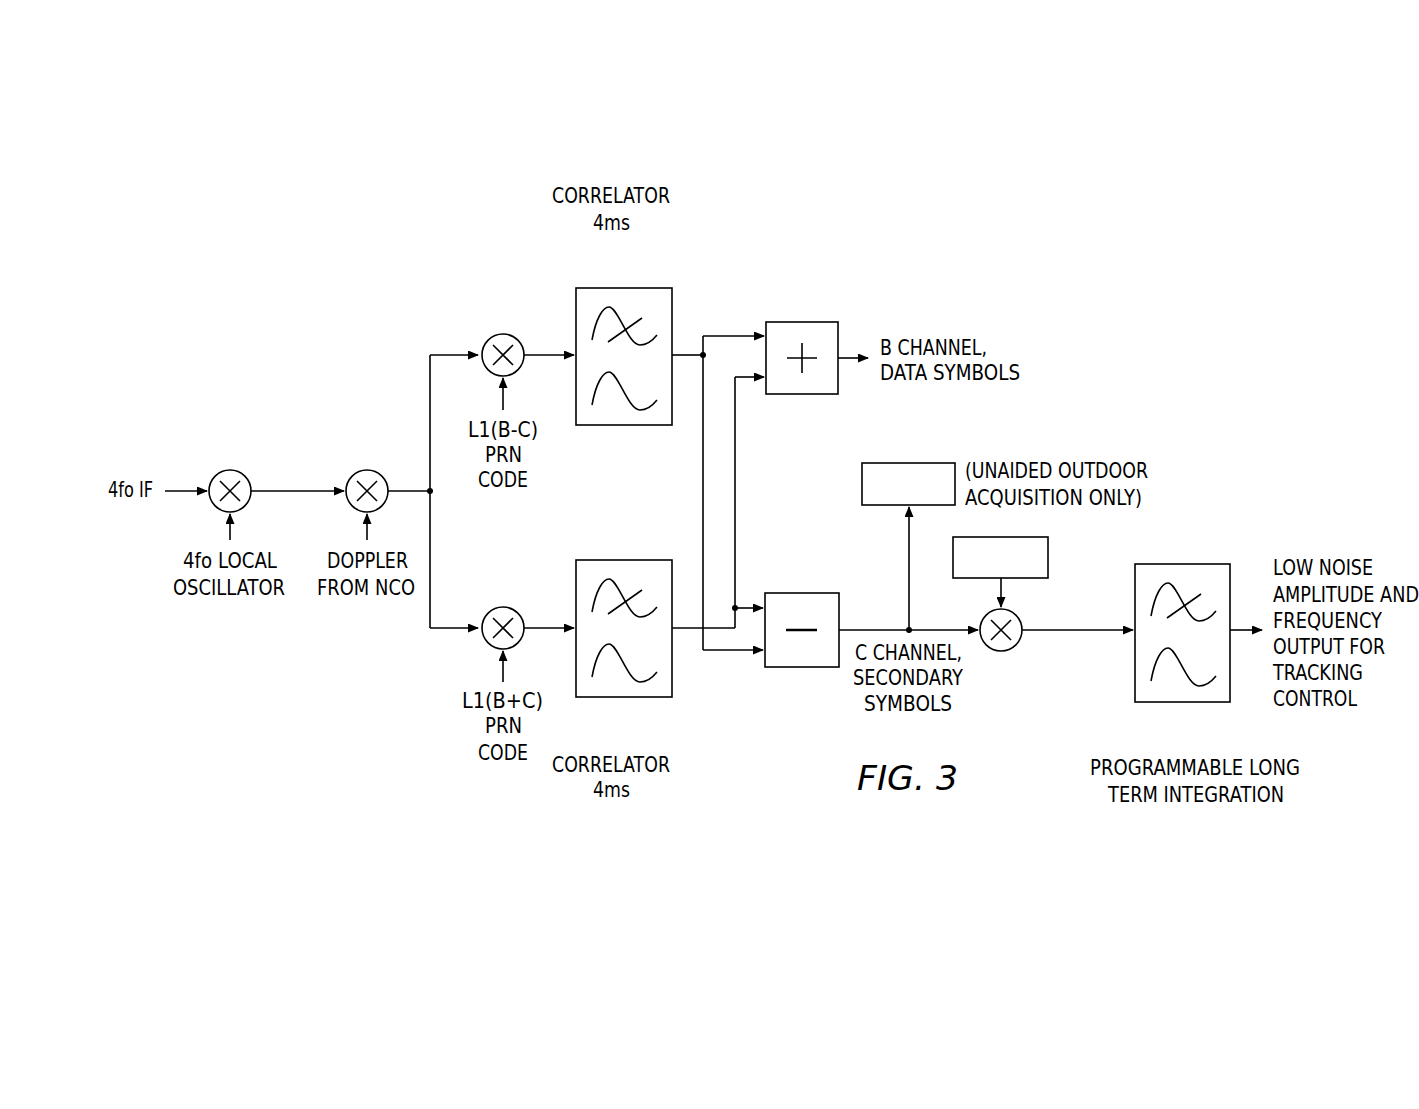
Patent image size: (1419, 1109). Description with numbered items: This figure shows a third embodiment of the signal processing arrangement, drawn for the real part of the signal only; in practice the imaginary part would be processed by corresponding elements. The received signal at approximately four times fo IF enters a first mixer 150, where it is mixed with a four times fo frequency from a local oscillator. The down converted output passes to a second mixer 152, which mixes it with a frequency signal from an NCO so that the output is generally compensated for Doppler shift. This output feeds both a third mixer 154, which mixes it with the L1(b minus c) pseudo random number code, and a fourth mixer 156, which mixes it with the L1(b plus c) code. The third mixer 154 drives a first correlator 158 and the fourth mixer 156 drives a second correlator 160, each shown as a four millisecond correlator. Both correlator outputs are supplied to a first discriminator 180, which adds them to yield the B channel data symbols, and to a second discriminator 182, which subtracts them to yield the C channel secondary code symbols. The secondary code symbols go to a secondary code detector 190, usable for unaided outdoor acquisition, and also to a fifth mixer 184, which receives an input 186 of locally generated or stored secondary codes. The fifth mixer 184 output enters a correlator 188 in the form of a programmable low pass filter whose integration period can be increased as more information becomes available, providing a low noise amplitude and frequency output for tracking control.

The first mixer 150 is at (221, 473).
The second mixer 152 is at (358, 473).
The third mixer 154 is at (494, 337).
The fourth mixer 156 is at (494, 610).
The first correlator 158 is at (622, 287).
The second correlator 160 is at (622, 698).
The first discriminator 180 is at (810, 321).
The second discriminator 182 is at (807, 668).
The fifth mixer 184 is at (1013, 647).
The input of secondary codes 186 is at (1048, 557).
The correlator 188 is at (1183, 703).
The secondary code detector 190 is at (918, 462).